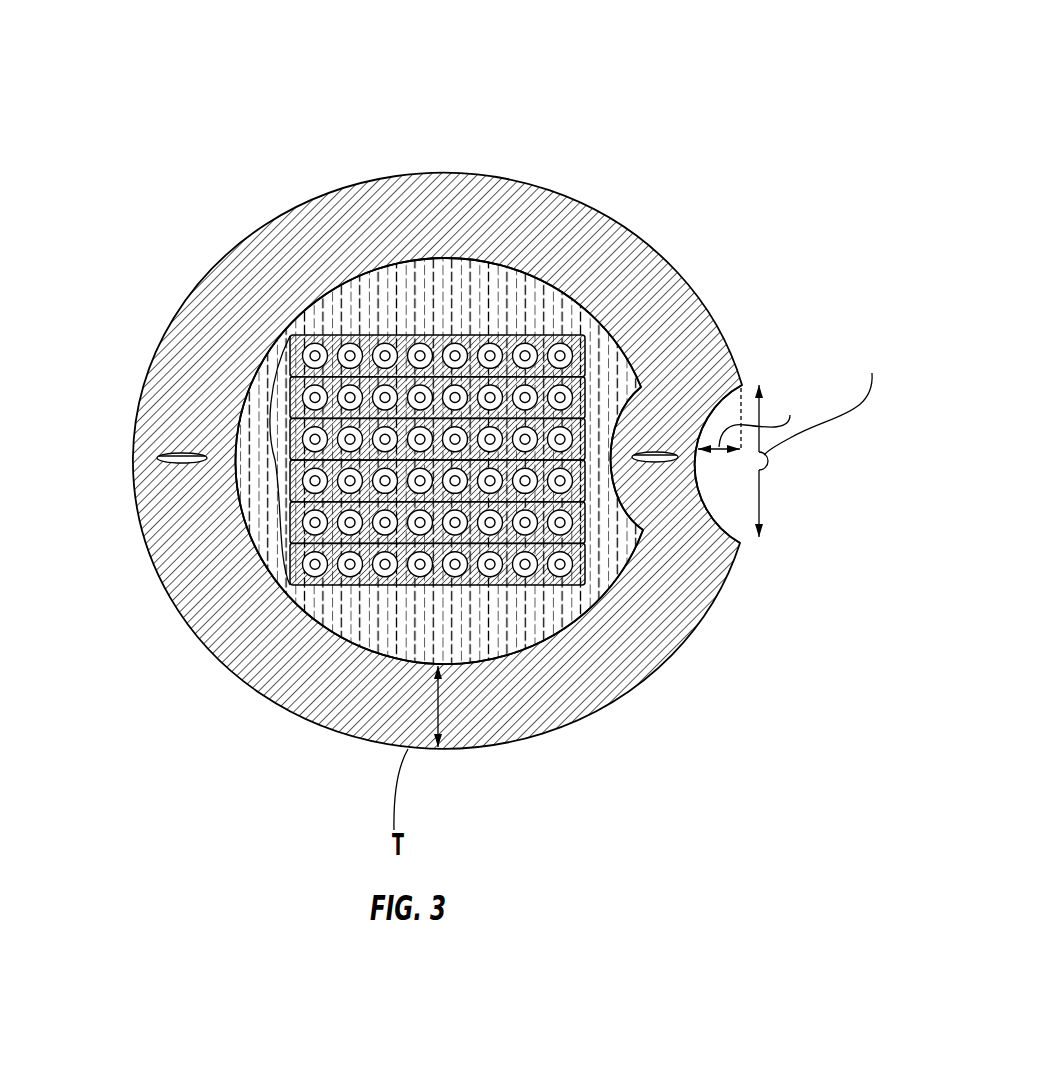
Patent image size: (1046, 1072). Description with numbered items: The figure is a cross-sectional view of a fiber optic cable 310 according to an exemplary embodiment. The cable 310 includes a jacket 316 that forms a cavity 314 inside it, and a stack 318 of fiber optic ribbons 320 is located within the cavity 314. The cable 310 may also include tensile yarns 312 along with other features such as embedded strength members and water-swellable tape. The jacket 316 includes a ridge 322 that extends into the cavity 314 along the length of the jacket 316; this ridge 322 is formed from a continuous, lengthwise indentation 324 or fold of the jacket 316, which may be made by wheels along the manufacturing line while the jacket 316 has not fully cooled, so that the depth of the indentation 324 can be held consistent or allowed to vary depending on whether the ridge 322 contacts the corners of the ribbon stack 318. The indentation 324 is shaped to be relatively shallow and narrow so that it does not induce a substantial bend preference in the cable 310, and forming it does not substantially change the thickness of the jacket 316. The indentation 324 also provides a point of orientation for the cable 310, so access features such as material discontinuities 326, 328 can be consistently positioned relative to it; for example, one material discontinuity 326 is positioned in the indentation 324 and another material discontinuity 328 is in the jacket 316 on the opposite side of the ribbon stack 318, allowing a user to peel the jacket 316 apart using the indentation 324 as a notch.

The fiber optic cable 310 is at (466, 421).
The tensile yarns 312 is at (397, 603).
The cavity 314 is at (532, 620).
The jacket 316 is at (404, 207).
The stack of fiber optic ribbons 318 is at (274, 460).
The fiber optic ribbons 320 is at (577, 480).
The ridge 322 is at (636, 368).
The indentation 324 is at (702, 494).
The material discontinuity 326 is at (723, 345).
The material discontinuity 328 is at (186, 452).